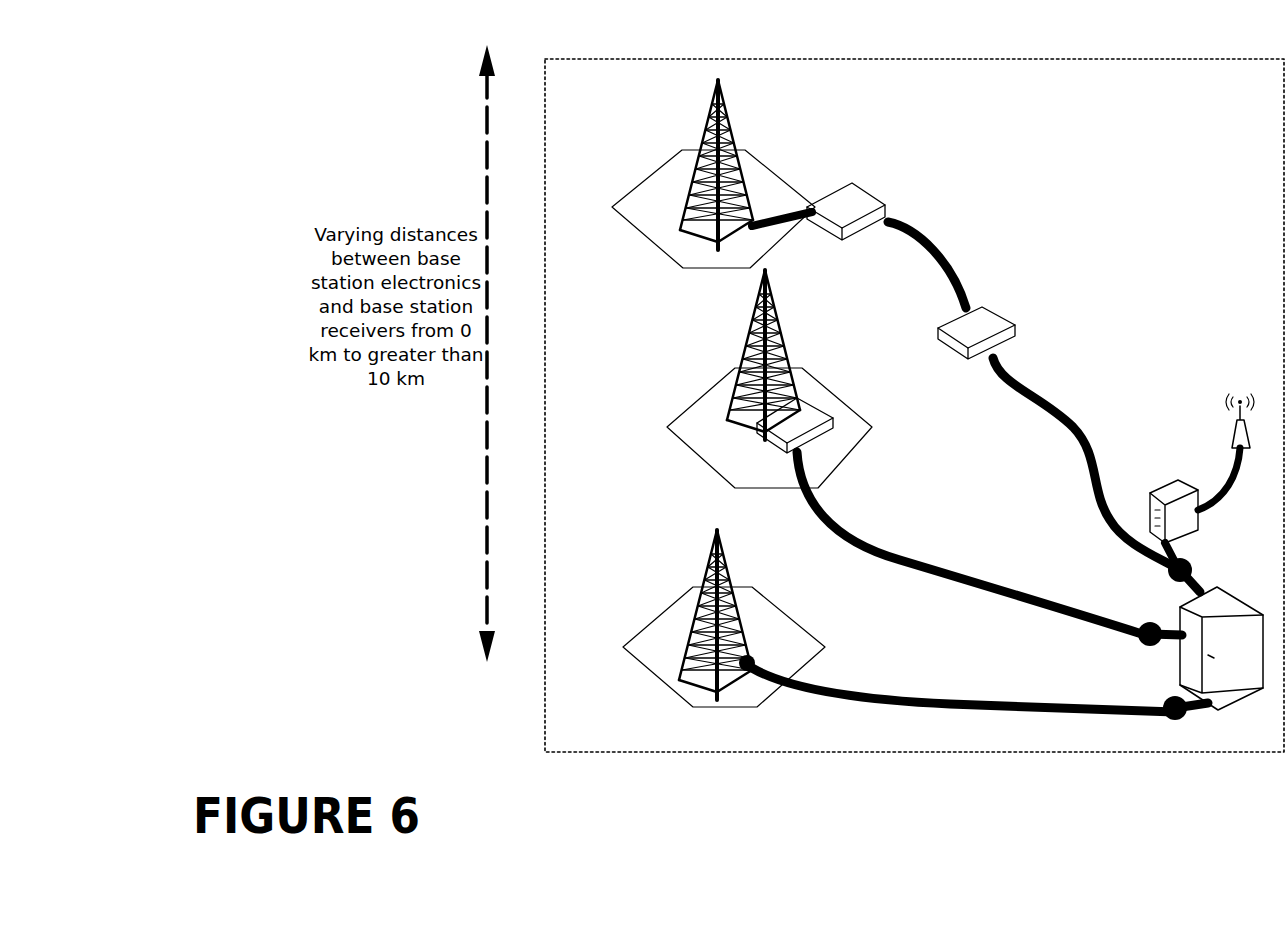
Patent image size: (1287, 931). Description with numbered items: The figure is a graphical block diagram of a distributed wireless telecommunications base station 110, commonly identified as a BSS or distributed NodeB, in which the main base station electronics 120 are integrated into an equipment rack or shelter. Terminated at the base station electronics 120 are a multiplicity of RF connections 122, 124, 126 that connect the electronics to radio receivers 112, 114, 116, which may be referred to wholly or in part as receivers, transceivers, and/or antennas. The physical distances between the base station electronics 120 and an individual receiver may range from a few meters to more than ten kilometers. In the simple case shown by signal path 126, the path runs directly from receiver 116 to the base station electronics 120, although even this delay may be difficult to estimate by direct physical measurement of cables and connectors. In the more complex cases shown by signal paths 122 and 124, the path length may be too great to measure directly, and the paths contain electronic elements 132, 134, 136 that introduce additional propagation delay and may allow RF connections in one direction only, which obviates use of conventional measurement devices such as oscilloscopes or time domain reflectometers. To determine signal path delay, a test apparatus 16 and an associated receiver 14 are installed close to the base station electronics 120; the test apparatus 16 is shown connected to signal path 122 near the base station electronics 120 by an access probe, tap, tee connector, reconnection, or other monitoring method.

The distributed wireless telecommunications base station 110 is at (905, 58).
The radio receiver 112 is at (713, 174).
The radio receiver 114 is at (744, 379).
The radio receiver 116 is at (720, 618).
The electronic element 132 is at (866, 250).
The electronic element 134 is at (950, 345).
The electronic element 136 is at (818, 423).
The RF connection 122 is at (1030, 405).
The RF connection 124 is at (942, 557).
The RF connection 126 is at (940, 683).
The receiver 14 is at (1235, 396).
The test apparatus 16 is at (1165, 478).
The base station electronics 120 is at (1231, 586).